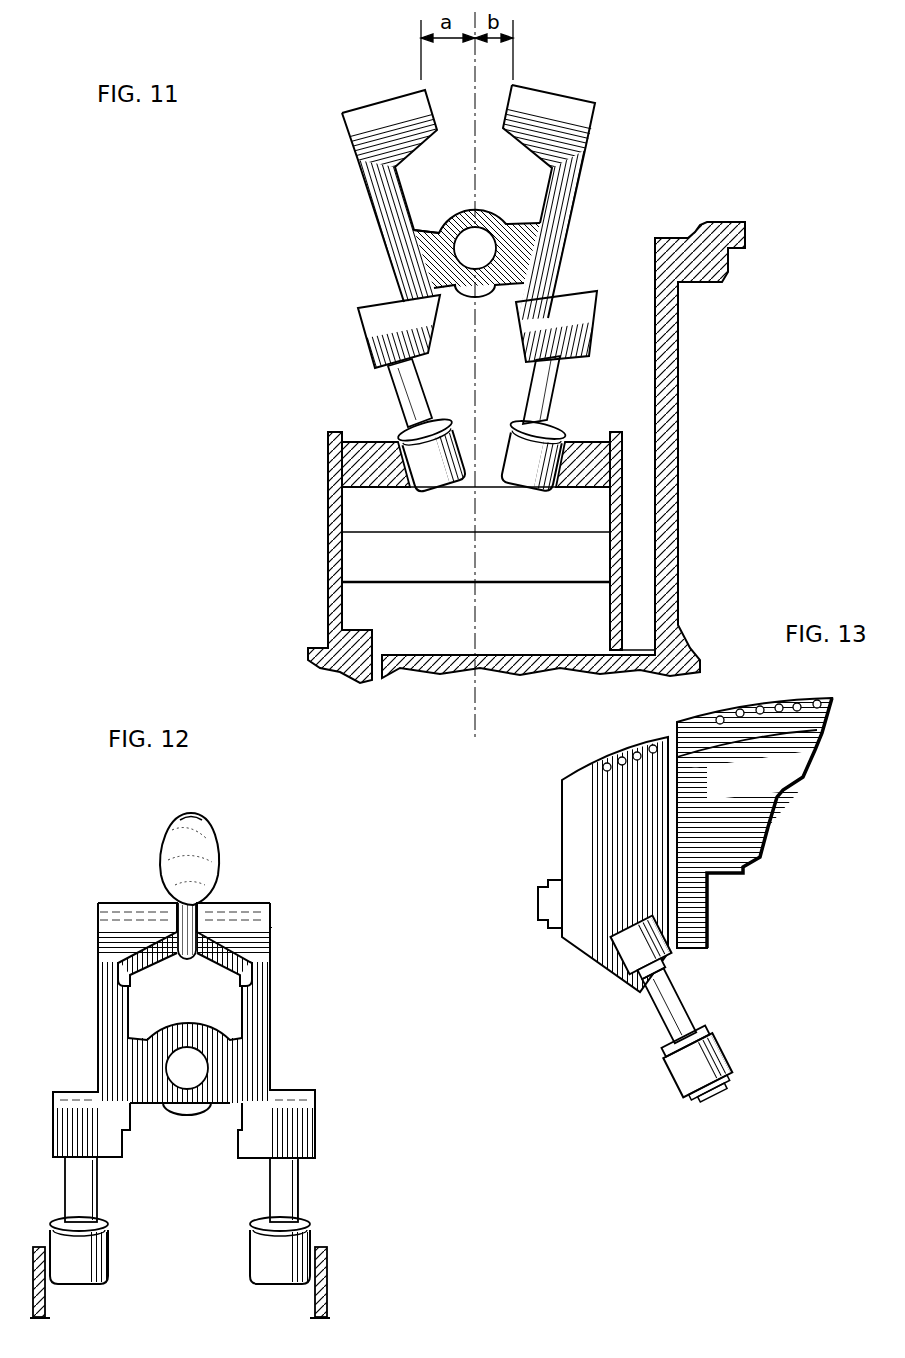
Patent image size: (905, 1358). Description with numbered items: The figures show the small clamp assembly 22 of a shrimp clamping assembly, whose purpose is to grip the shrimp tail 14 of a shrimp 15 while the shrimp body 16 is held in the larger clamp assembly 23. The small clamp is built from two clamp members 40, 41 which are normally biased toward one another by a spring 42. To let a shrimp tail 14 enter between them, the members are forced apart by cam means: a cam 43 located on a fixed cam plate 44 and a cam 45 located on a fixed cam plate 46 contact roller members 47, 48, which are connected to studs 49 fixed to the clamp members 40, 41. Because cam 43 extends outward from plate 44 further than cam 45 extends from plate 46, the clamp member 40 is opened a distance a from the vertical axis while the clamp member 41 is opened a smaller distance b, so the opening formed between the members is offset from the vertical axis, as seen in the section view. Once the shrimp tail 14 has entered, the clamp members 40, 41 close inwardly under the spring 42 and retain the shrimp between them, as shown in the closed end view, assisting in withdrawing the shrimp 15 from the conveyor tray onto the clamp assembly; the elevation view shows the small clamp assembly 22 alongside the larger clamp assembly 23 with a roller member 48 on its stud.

In FIG. 12, the shrimp tail 14 is at (190, 966).
In FIG. 12, the shrimp 15 is at (192, 820).
In FIG. 12, the shrimp body 16 is at (218, 868).
In FIG. 12, the small clamp assembly 22 is at (272, 927).
In FIG. 13, the small clamp assembly 22 is at (562, 800).
In FIG. 13, the larger clamp assembly 23 is at (763, 788).
In FIG. 11, the clamp member 40 is at (352, 118).
In FIG. 12, the clamp member 40 is at (100, 905).
In FIG. 11, the clamp member 41 is at (585, 105).
In FIG. 12, the clamp member 41 is at (243, 905).
In FIG. 13, the clamp member 41 is at (585, 847).
In FIG. 11, the spring 42 is at (482, 213).
In FIG. 12, the spring 42 is at (172, 1032).
In FIG. 11, the cam 43 is at (340, 432).
In FIG. 11, the fixed cam plate 44 is at (330, 520).
In FIG. 11, the cam 45 is at (606, 432).
In FIG. 11, the fixed cam plate 46 is at (609, 500).
In FIG. 11, the roller member 47 is at (422, 480).
In FIG. 12, the roller member 47 is at (105, 1272).
In FIG. 11, the roller member 48 is at (528, 470).
In FIG. 12, the roller member 48 is at (256, 1266).
In FIG. 13, the roller member 48 is at (678, 1072).
In FIG. 11, the stud 49 is at (535, 400).
In FIG. 12, the stud 49 is at (273, 1200).